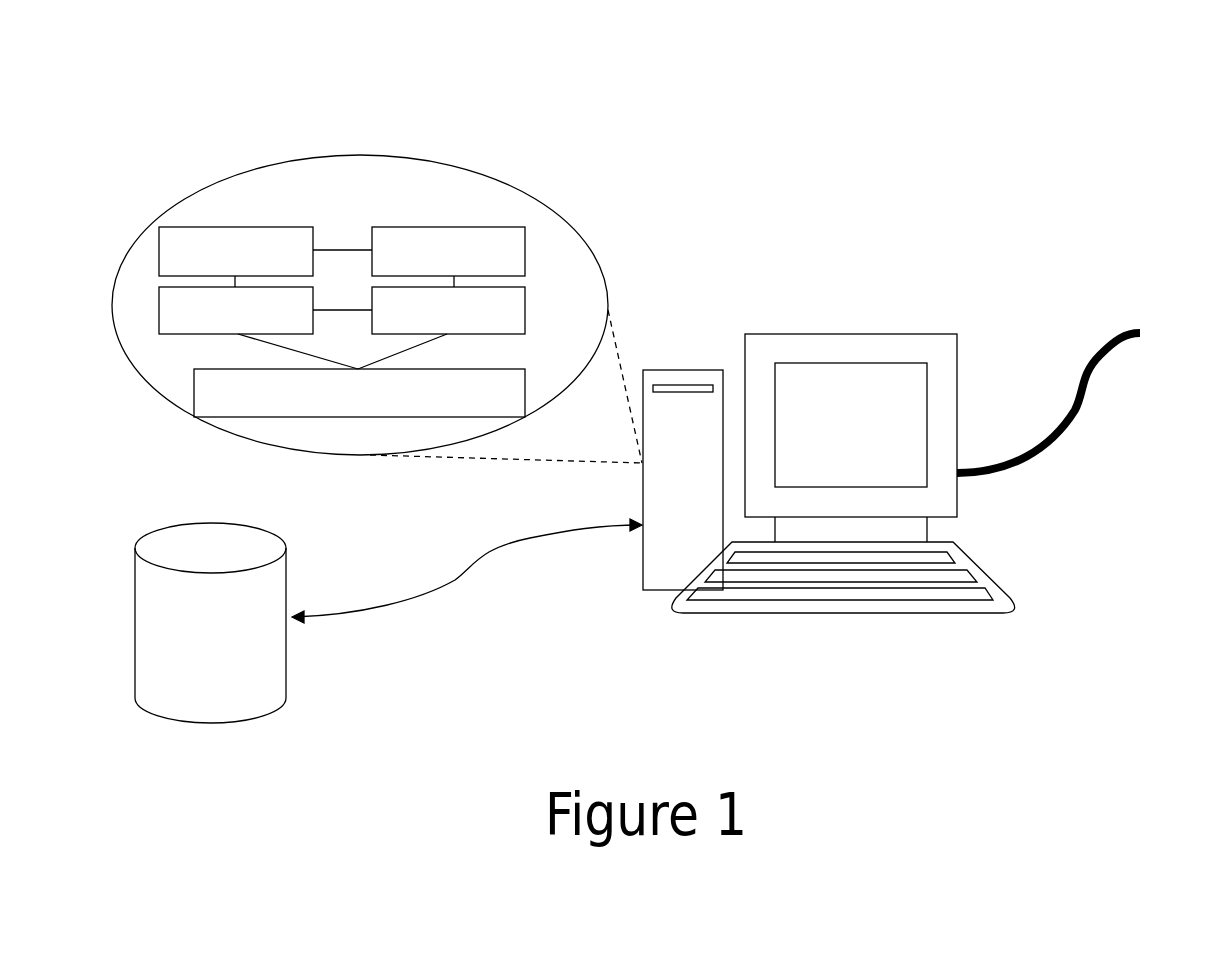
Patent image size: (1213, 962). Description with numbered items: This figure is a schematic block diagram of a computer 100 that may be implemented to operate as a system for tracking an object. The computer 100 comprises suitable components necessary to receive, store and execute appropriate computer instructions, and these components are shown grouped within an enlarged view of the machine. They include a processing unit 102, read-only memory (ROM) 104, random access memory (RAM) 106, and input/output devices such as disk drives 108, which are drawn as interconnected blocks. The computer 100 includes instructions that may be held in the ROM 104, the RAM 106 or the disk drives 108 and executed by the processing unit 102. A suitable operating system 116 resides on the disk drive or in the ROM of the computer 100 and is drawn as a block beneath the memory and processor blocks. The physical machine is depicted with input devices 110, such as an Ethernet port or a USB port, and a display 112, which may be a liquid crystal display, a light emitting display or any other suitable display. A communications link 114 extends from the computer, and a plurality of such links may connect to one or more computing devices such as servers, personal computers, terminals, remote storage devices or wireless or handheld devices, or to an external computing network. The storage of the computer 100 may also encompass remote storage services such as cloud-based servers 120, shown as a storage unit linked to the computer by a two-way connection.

The computer 100 is at (985, 133).
The processing unit 102 is at (265, 257).
The read-only memory (ROM) 104 is at (448, 257).
The random access memory (RAM) 106 is at (265, 328).
The disk drives 108 is at (441, 328).
The input devices 110 is at (857, 618).
The display 112 is at (833, 334).
The communications links 114 is at (1078, 393).
The operating system 116 is at (359, 393).
The cloud-based servers 120 is at (210, 623).